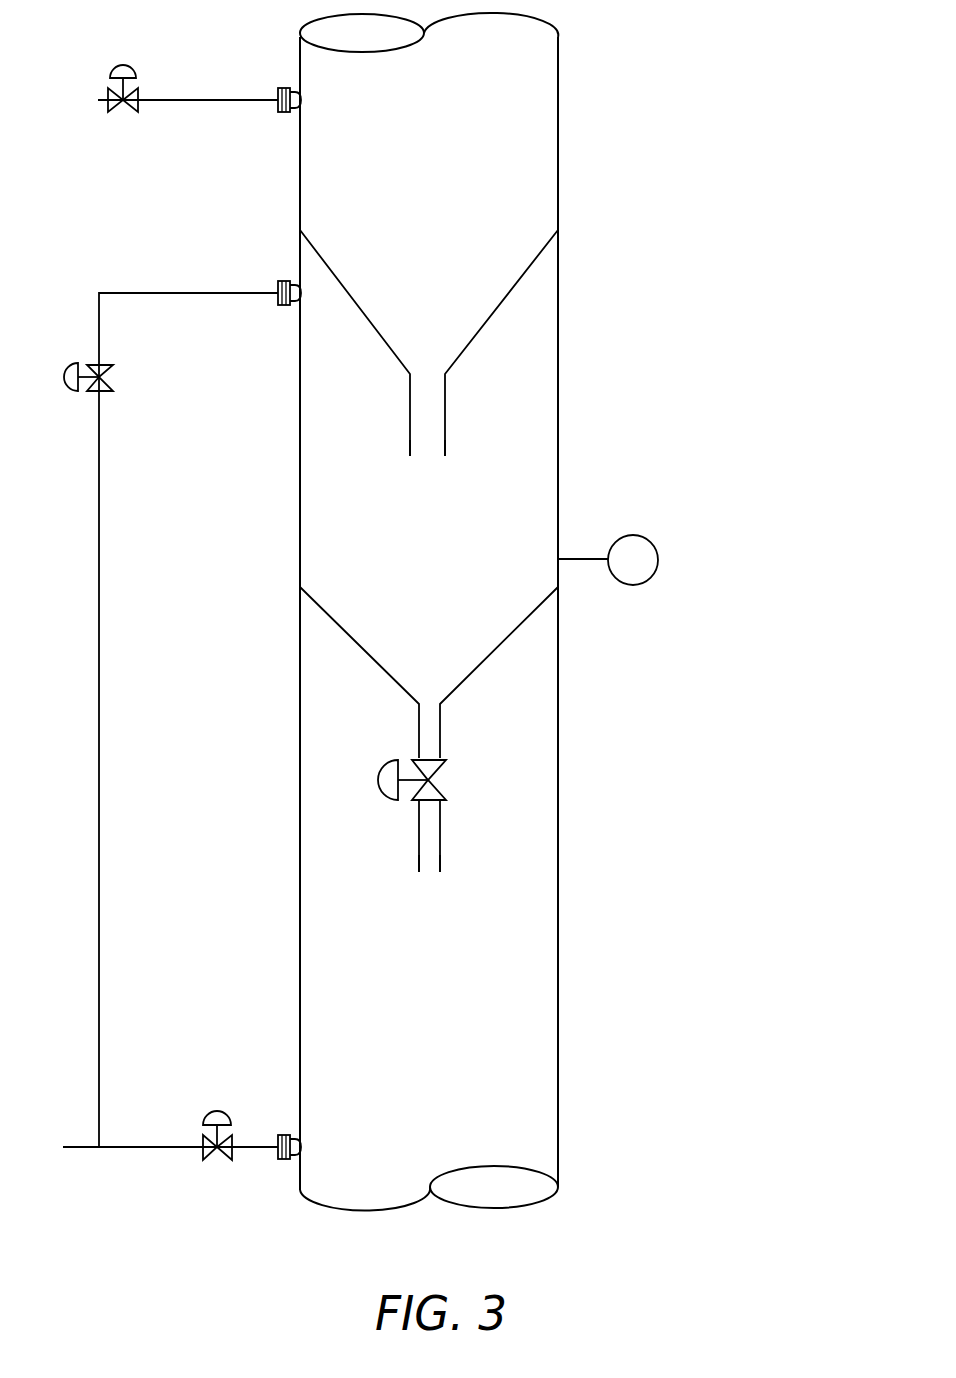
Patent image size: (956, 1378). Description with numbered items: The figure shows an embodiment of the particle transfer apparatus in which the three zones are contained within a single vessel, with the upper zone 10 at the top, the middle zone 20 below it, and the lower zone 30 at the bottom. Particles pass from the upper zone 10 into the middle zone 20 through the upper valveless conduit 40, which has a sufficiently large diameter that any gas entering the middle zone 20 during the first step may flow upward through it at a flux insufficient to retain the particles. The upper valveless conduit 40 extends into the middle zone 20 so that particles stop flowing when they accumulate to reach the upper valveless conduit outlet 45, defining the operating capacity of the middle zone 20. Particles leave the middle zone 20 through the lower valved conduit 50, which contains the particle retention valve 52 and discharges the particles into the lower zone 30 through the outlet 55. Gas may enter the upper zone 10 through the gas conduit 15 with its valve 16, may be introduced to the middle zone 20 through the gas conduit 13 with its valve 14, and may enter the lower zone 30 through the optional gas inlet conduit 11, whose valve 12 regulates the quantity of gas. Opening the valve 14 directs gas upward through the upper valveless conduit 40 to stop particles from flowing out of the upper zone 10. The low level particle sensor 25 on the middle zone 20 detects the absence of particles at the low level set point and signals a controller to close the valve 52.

The upper zone 10 is at (490, 123).
The gas inlet conduit 11 is at (174, 1146).
The valve 12 is at (222, 1110).
The gas conduit 13 is at (262, 292).
The valve 14 is at (70, 365).
The gas conduit 15 is at (243, 99).
The valve 16 is at (119, 64).
The middle zone 20 is at (538, 441).
The low level particle sensor 25 is at (648, 541).
The lower zone 30 is at (527, 755).
The upper valveless conduit 40 is at (432, 412).
The upper valveless conduit outlet 45 is at (430, 462).
The lower valved conduit 50 is at (432, 727).
The valve 52 is at (386, 768).
The outlet 55 is at (430, 874).